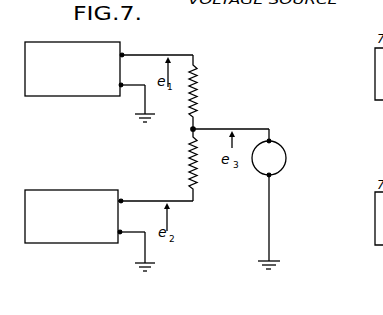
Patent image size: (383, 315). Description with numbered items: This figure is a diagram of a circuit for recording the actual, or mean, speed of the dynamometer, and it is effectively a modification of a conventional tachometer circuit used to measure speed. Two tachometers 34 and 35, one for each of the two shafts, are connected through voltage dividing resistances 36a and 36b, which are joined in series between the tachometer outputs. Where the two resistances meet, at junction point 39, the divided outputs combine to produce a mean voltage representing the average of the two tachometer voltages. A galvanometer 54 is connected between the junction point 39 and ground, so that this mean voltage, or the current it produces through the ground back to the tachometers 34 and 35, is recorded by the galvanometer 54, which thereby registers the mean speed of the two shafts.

The tachometer 34 is at (84, 78).
The tachometer 35 is at (84, 225).
The voltage dividing resistance 36a is at (197, 108).
The voltage dividing resistance 36b is at (192, 168).
The junction point 39 is at (195, 128).
The galvanometer 54 is at (311, 147).